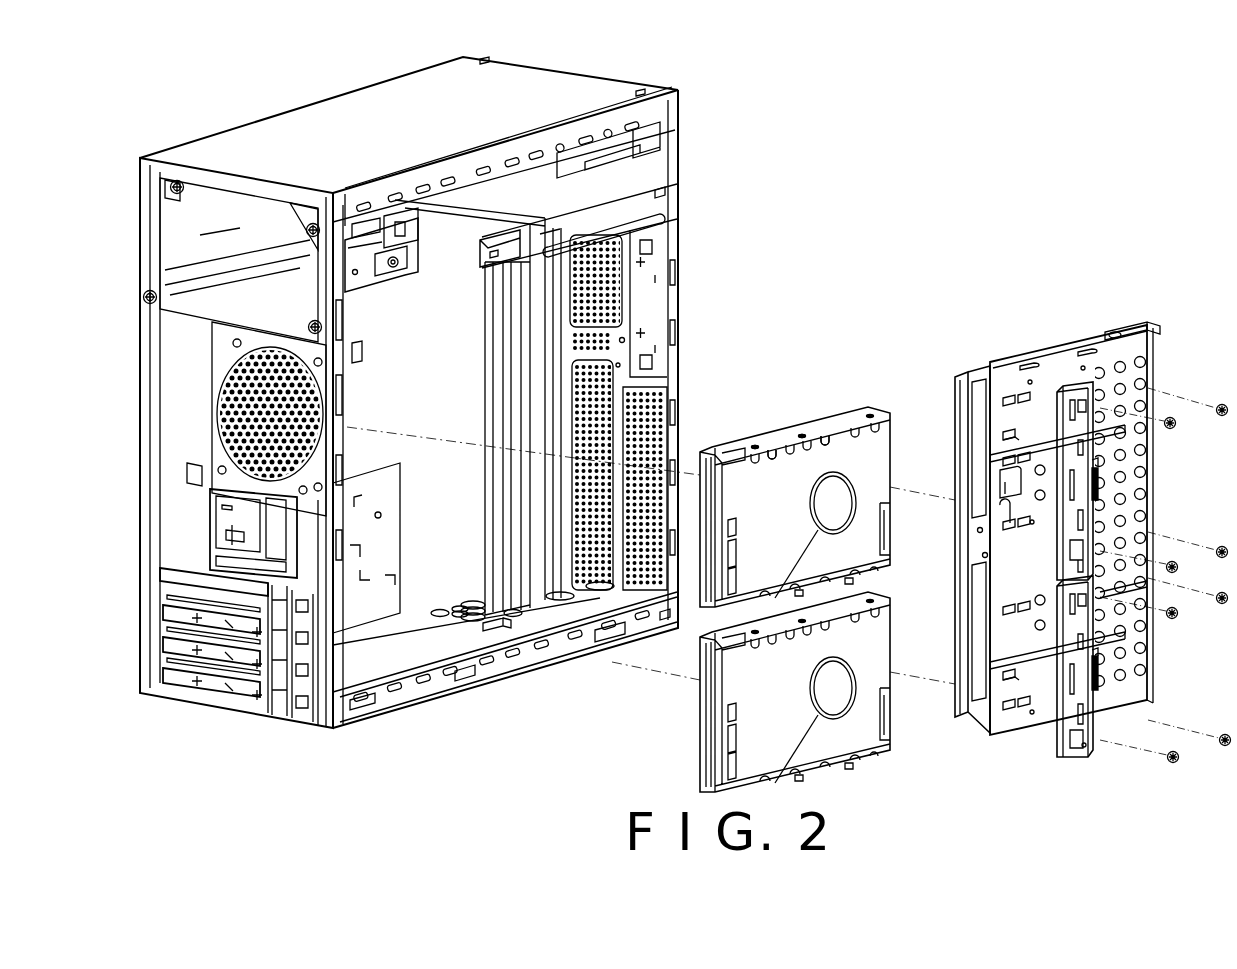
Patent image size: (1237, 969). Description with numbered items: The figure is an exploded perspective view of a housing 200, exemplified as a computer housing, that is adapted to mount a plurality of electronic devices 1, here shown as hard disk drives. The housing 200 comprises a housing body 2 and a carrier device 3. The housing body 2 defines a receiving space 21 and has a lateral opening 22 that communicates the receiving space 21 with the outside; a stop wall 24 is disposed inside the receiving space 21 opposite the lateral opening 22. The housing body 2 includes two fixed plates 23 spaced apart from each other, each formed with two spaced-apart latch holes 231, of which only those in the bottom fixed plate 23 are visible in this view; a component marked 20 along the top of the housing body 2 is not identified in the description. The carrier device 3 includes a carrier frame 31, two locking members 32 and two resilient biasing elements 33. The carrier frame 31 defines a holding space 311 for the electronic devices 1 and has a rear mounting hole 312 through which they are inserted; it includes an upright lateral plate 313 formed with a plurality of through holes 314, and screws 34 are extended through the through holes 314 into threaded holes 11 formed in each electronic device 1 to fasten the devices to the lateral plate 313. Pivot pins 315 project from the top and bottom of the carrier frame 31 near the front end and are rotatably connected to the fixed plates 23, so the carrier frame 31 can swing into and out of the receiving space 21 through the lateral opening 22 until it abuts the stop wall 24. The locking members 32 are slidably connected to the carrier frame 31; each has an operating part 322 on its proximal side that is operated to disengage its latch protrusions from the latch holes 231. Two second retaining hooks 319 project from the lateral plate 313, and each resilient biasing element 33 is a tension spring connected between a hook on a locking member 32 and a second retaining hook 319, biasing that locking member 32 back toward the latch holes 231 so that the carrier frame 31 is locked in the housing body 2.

The housing body 2 is at (683, 60).
The housing 200 is at (233, 112).
The top rail 20 is at (690, 108).
The receiving space 21 is at (566, 256).
The lateral opening 22 is at (618, 618).
The fixed plates 23 is at (500, 248).
The latch holes 231 is at (512, 622).
The stop wall 24 is at (498, 346).
The electronic devices 1 is at (703, 478).
The threaded holes 11 is at (825, 440).
The carrier device 3 is at (1125, 306).
The carrier frame 31 is at (1156, 352).
The holding space 311 is at (984, 720).
The rear mounting hole 312 is at (978, 722).
The upright lateral plate 313 is at (1130, 504).
The through holes 314 is at (1082, 366).
The pivot pins 315 is at (1140, 332).
The second retaining hooks 319 is at (1012, 430).
The locking members 32 is at (1095, 428).
The operating part 322 is at (1138, 585).
The resilient biasing elements 33 is at (1100, 497).
The screws 34 is at (1180, 762).